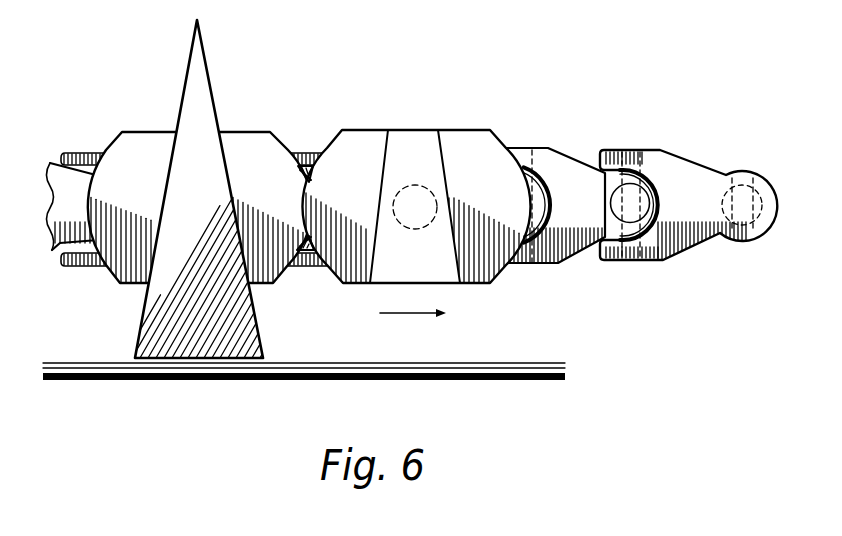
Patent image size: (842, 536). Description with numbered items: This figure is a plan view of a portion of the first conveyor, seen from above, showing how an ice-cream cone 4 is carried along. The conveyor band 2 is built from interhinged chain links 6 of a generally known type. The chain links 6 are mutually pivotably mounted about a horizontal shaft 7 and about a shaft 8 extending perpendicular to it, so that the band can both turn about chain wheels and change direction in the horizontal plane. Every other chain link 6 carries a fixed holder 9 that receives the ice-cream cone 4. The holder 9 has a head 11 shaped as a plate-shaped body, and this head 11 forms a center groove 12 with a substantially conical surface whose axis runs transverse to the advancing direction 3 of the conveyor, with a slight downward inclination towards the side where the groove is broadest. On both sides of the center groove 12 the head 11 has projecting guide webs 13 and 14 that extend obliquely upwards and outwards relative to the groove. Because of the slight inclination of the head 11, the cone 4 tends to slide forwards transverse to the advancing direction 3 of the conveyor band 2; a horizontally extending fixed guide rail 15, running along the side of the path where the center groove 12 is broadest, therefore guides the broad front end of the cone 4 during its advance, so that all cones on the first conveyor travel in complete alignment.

The conveyor band 2 is at (562, 165).
The arrow indicating advancing direction 3 is at (380, 313).
The ice-cream cone 4 is at (160, 300).
The chain link 6 is at (575, 252).
The horizontal shaft 7 is at (640, 252).
The shaft 8 is at (634, 203).
The holder 9 is at (257, 142).
The head 11 is at (360, 145).
The center groove 12 is at (408, 150).
The guide web 13 is at (281, 165).
The guide web 14 is at (132, 150).
The guide rail 15 is at (376, 382).